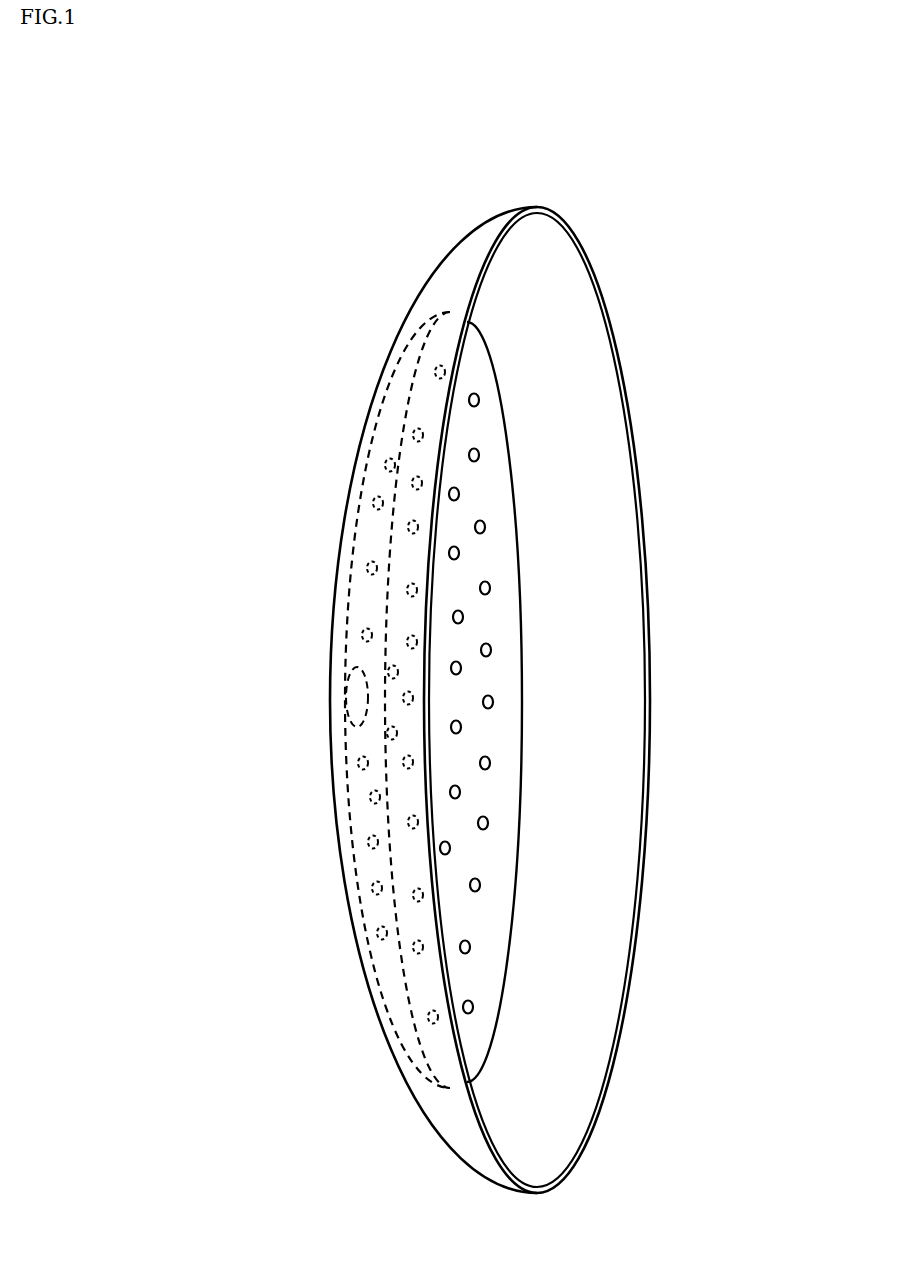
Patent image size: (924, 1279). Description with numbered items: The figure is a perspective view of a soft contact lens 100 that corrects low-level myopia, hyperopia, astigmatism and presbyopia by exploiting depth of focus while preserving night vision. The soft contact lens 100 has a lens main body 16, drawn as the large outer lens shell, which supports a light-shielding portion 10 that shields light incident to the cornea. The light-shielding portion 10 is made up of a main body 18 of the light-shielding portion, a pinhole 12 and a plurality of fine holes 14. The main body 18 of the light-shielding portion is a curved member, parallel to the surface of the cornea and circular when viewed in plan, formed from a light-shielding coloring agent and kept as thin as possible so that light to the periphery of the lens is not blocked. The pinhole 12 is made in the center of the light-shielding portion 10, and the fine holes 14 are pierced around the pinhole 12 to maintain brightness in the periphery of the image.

The soft contact lens 100 is at (282, 240).
The light-shielding portion 10 is at (515, 870).
The pinhole 12 is at (352, 693).
The fine holes 14 is at (350, 546).
The lens main body 16 is at (648, 603).
The main body of the light-shielding portion 18 is at (377, 981).